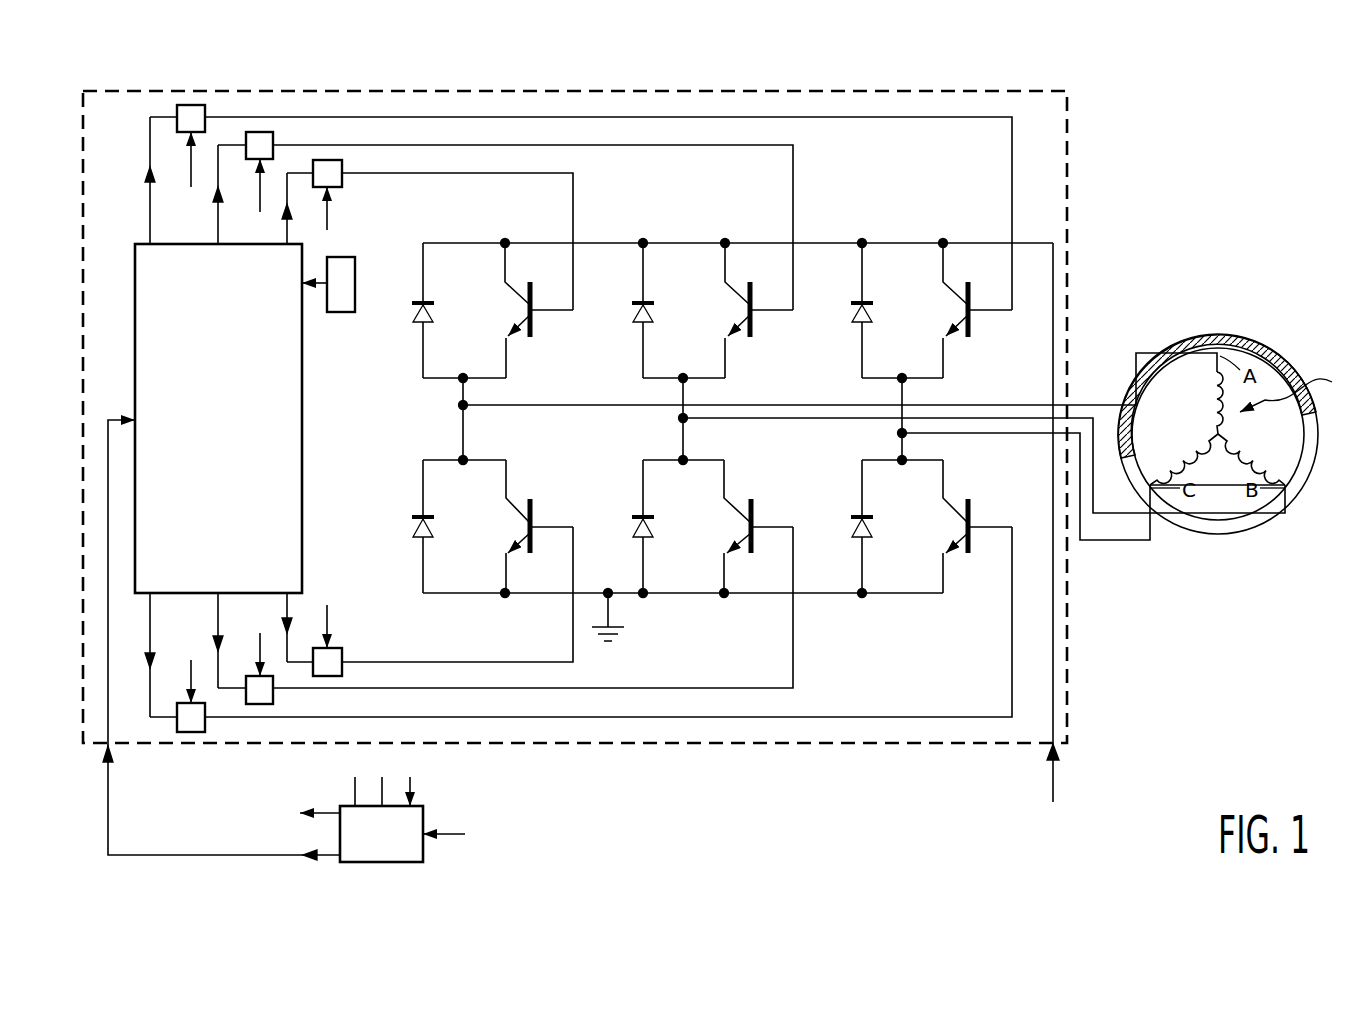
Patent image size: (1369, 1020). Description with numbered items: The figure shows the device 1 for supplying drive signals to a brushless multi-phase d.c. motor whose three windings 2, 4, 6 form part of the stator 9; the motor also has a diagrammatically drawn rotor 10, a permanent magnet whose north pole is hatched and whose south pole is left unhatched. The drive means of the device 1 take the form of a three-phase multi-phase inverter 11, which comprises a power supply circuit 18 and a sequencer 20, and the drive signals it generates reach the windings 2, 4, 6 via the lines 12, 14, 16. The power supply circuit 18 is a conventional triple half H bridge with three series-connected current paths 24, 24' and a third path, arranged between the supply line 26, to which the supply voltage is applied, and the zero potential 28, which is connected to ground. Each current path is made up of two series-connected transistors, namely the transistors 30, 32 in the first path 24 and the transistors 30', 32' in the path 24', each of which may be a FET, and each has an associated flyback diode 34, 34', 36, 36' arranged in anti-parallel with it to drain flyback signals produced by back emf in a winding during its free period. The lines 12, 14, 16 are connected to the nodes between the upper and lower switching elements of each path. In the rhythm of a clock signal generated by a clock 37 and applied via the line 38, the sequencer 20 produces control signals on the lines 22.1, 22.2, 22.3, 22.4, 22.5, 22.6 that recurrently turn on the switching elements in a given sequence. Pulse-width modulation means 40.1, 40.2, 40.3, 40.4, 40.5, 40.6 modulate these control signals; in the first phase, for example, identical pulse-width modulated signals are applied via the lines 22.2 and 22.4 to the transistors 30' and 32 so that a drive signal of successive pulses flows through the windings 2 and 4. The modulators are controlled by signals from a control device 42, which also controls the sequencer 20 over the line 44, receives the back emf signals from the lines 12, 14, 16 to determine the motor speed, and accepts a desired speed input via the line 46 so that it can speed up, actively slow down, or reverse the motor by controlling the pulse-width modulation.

The device 1 is at (592, 793).
The winding 2 is at (1208, 390).
The winding 4 is at (1262, 455).
The winding 6 is at (1176, 455).
The stator 9 is at (1293, 390).
The rotor 10 is at (1228, 334).
The multi-phase inverter 11 is at (1043, 727).
The line 12 is at (545, 408).
The line 14 is at (806, 420).
The line 16 is at (1019, 435).
The power supply circuit 18 is at (667, 441).
The sequencer 20 is at (228, 434).
The line 22.1 is at (1012, 137).
The line 22.2 is at (793, 163).
The line 22.3 is at (573, 190).
The line 22.4 is at (573, 640).
The line 22.5 is at (793, 663).
The line 22.6 is at (1012, 697).
The current path 24 is at (464, 403).
The current path 24' is at (684, 403).
The supply line 26 is at (670, 242).
The zero potential 28 is at (683, 596).
The transistor 30 is at (539, 311).
The transistor 30' is at (759, 311).
The transistor 32 is at (498, 526).
The transistor 32' is at (718, 526).
The flyback diode 34 is at (410, 310).
The flyback diode 34' is at (629, 310).
The flyback diode 36 is at (410, 526).
The flyback diode 36' is at (630, 526).
The clock 37 is at (342, 313).
The line 38 is at (305, 290).
The pulse-width modulation means 40.1 is at (205, 112).
The pulse-width modulation means 40.2 is at (273, 138).
The pulse-width modulation means 40.3 is at (342, 182).
The pulse-width modulation means 40.4 is at (342, 658).
The pulse-width modulation means 40.5 is at (273, 698).
The pulse-width modulation means 40.6 is at (205, 727).
The control device 42 is at (391, 847).
The line 44 is at (195, 855).
The line 46 is at (459, 835).